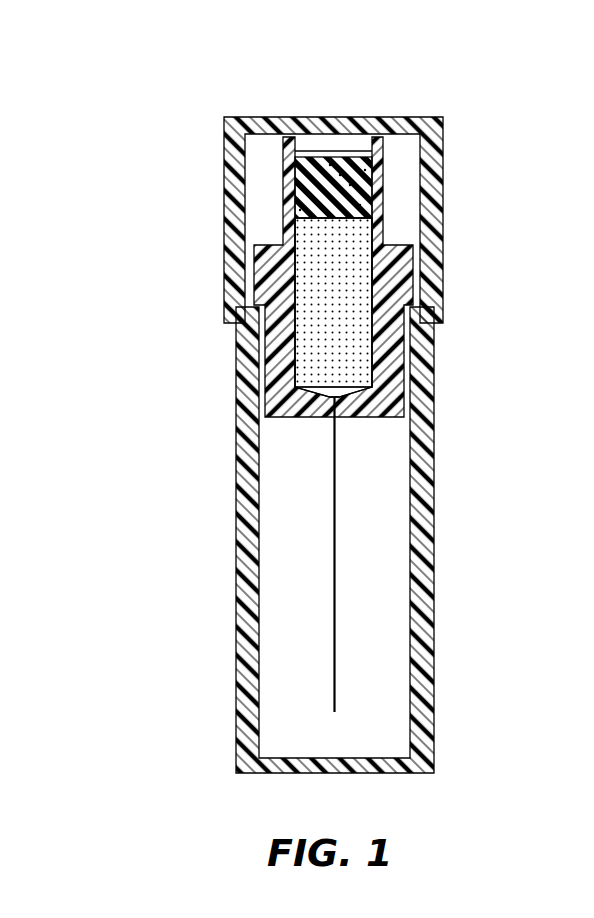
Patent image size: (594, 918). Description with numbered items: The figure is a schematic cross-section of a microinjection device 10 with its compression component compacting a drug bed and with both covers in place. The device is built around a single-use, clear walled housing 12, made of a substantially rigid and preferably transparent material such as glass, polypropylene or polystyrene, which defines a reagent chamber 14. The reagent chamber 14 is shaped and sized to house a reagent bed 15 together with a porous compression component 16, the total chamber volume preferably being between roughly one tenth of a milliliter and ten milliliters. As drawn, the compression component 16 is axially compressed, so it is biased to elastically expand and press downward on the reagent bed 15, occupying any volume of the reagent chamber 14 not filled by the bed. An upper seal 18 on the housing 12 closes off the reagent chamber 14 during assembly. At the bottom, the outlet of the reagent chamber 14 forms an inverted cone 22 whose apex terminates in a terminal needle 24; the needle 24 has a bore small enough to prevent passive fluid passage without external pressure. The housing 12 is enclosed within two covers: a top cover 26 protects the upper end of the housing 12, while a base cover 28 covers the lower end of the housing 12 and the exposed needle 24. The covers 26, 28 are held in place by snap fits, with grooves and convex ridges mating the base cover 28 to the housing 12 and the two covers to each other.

The microinjection device 10 is at (155, 641).
The housing 12 is at (272, 156).
The reagent chamber 14 is at (362, 269).
The reagent bed 15 is at (347, 343).
The compression component 16 is at (340, 167).
The upper seal 18 is at (315, 150).
The inverted cone 22 is at (338, 392).
The terminal needle 24 is at (336, 545).
The top cover 26 is at (233, 260).
The base cover 28 is at (247, 436).